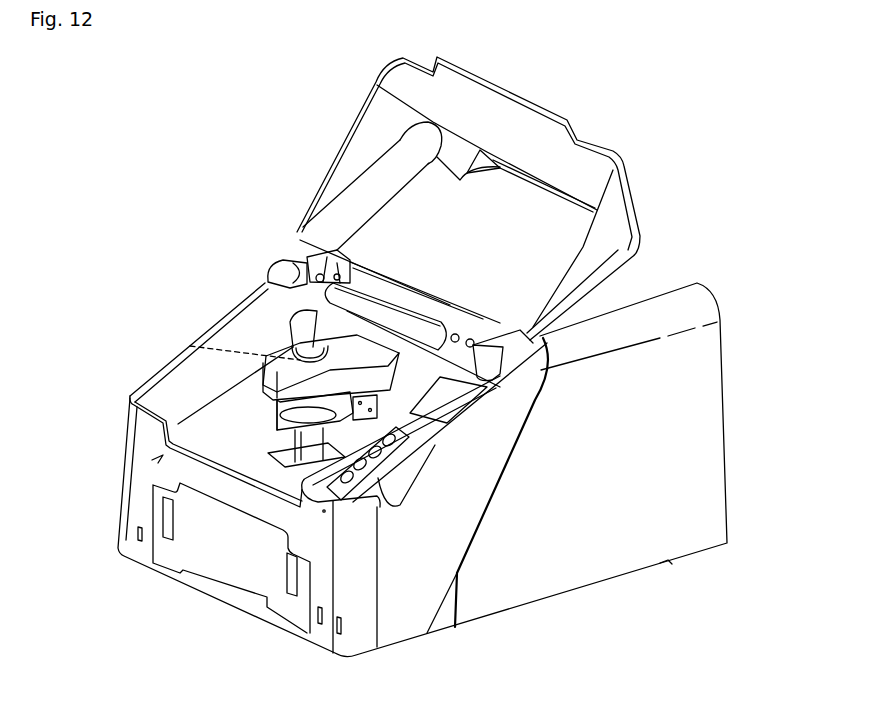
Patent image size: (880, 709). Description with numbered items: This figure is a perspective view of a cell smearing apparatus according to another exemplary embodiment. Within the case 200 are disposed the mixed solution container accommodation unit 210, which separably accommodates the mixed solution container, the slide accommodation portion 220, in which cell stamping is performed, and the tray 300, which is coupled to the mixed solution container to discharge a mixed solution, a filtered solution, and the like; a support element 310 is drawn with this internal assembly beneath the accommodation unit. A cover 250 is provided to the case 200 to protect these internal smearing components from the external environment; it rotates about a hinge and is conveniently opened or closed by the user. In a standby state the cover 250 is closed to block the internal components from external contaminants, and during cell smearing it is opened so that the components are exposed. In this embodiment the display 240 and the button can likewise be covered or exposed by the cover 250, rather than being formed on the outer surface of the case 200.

The case 200 is at (722, 358).
The cover 250 is at (632, 187).
The display 240 is at (443, 400).
The mixed solution container accommodation unit 210 is at (288, 352).
The slide accommodation portion 220 is at (285, 372).
The support shaft 310 is at (273, 417).
The tray 300 is at (270, 427).